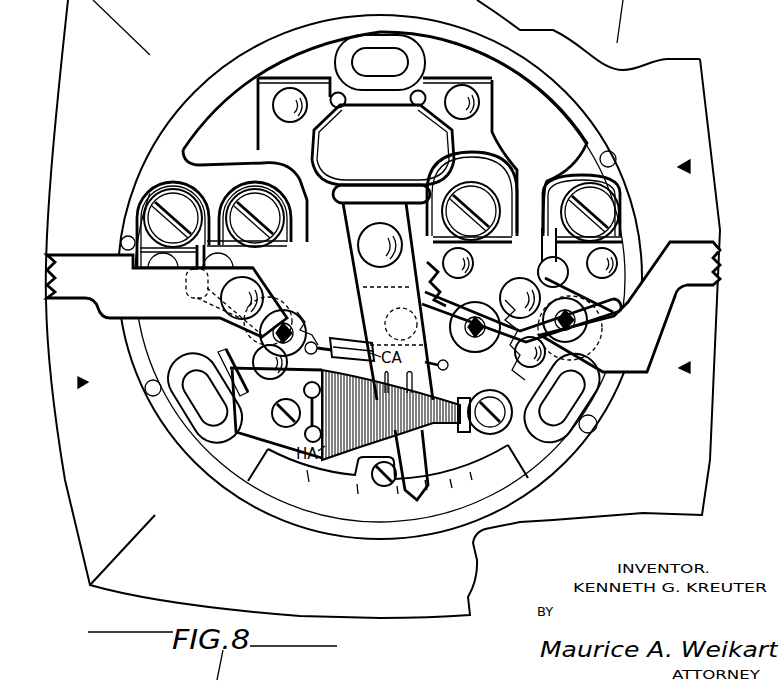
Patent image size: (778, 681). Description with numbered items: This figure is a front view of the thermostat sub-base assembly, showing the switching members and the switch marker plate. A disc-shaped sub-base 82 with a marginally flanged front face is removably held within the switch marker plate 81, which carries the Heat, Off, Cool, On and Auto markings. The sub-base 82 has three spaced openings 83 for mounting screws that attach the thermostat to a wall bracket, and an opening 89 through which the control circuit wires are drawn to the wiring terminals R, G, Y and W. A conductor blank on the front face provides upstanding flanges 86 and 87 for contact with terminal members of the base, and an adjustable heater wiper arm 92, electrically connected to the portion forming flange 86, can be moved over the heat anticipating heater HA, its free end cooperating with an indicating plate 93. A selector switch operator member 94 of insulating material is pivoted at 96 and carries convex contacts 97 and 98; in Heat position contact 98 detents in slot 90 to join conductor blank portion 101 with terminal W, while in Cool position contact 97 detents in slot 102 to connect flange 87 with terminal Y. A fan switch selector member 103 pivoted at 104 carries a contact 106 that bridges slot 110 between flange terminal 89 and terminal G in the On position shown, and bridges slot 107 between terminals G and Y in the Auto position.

The switch marker plate 81 is at (119, 114).
The sub-base 82 is at (227, 139).
The spaced openings 83 is at (380, 48).
The upstanding flange 86 is at (300, 78).
The upstanding flange 87 is at (448, 78).
The opening 89 is at (389, 139).
The slot 90 is at (602, 300).
The adjustable heater wiper arm 92 is at (389, 322).
The indicating plate 93 is at (458, 469).
The selector switch operator member 94 is at (677, 298).
The pivot 96 is at (528, 287).
The contact 97 is at (493, 374).
The contact 98 is at (578, 334).
The conductor blank portion 101 is at (577, 393).
The slot 102 is at (427, 298).
The fan switch selector member 103 is at (110, 320).
The pivot 104 is at (257, 290).
The contact 106 is at (299, 411).
The slot 107 is at (297, 312).
The slot 110 is at (258, 330).